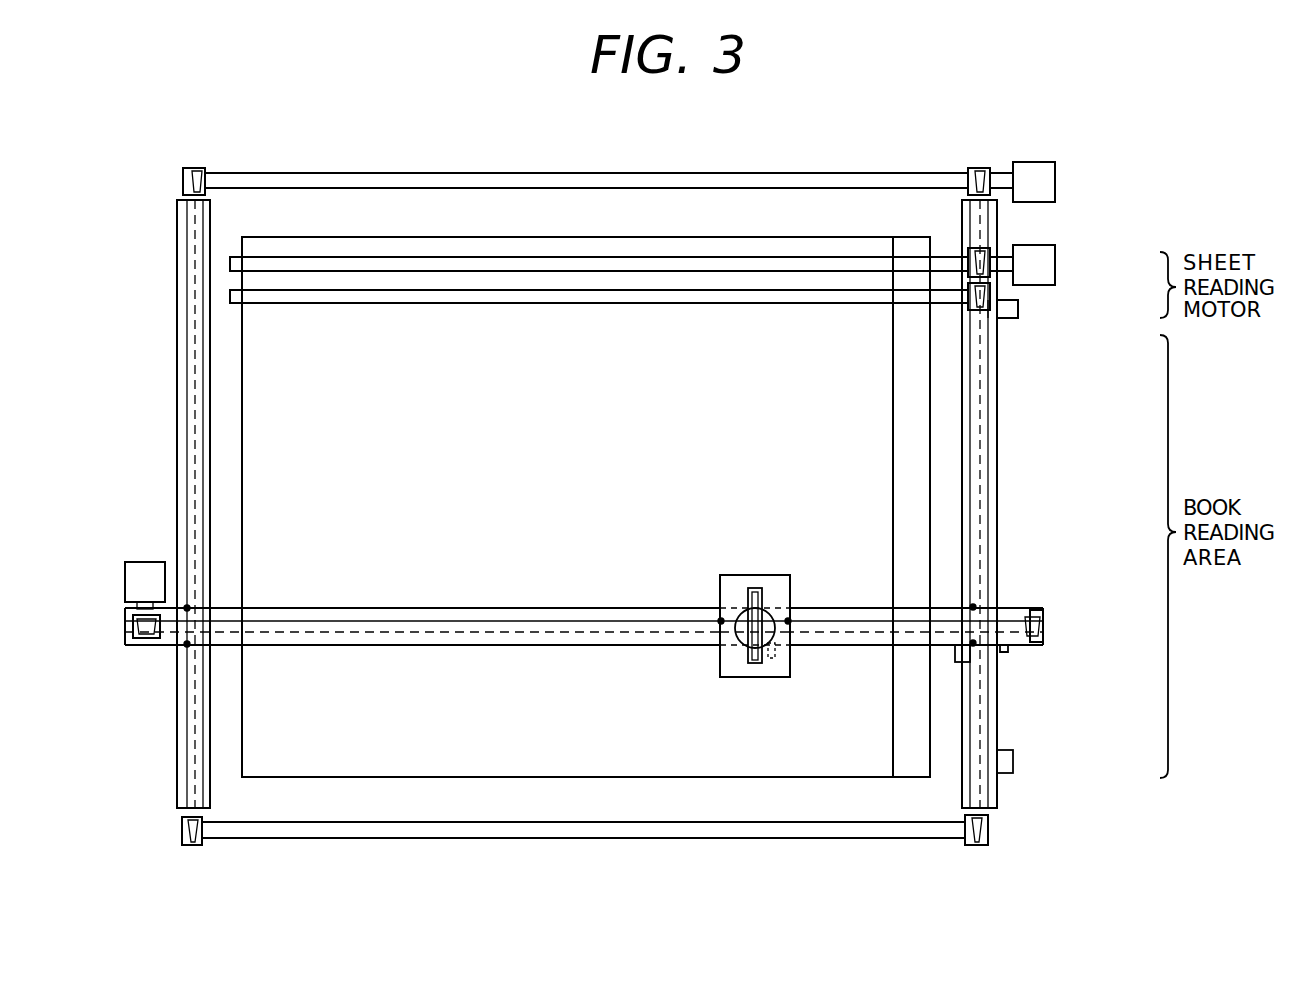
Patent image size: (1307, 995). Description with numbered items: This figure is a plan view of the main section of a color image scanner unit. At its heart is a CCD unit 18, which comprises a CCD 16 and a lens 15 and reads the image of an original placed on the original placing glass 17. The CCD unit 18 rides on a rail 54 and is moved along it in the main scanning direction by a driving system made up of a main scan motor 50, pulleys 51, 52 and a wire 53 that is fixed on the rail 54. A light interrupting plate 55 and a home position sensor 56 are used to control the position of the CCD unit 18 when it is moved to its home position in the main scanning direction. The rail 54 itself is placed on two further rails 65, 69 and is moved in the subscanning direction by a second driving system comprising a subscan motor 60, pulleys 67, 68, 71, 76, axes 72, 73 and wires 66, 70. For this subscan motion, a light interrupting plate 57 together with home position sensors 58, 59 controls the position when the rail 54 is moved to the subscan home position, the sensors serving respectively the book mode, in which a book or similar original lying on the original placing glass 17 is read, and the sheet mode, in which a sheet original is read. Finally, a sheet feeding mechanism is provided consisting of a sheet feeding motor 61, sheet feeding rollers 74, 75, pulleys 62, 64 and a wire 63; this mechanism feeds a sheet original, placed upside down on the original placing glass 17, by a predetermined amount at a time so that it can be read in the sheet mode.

The lens 15 is at (768, 608).
The CCD 16 is at (748, 655).
The original placing glass 17 is at (625, 777).
The CCD unit 18 is at (720, 585).
The main scan motor 50 is at (135, 562).
The pulley 51 is at (140, 645).
The pulley 52 is at (1045, 625).
The wire 53 is at (415, 620).
The rail 54 is at (355, 645).
The light interrupting plate 55 is at (772, 660).
The home position sensor 56 is at (965, 662).
The light interrupting plate 57 is at (1005, 652).
The home position sensor 58 is at (1013, 760).
The home position sensor 59 is at (1018, 310).
The subscan motor 60 is at (1055, 178).
The sheet feeding motor 61 is at (1055, 265).
The pulley 62 is at (985, 256).
The wire 63 is at (990, 283).
The pulley 64 is at (990, 318).
The rail 65 is at (997, 478).
The wire 66 is at (997, 800).
The pulley 67 is at (980, 845).
The pulley 68 is at (197, 167).
The rail 69 is at (177, 370).
The wire 70 is at (185, 752).
The pulley 71 is at (190, 845).
The axis 72 is at (540, 173).
The axis 73 is at (500, 838).
The sheet feeding roller 74 is at (383, 262).
The sheet feeding roller 75 is at (590, 300).
The pulley 76 is at (975, 168).